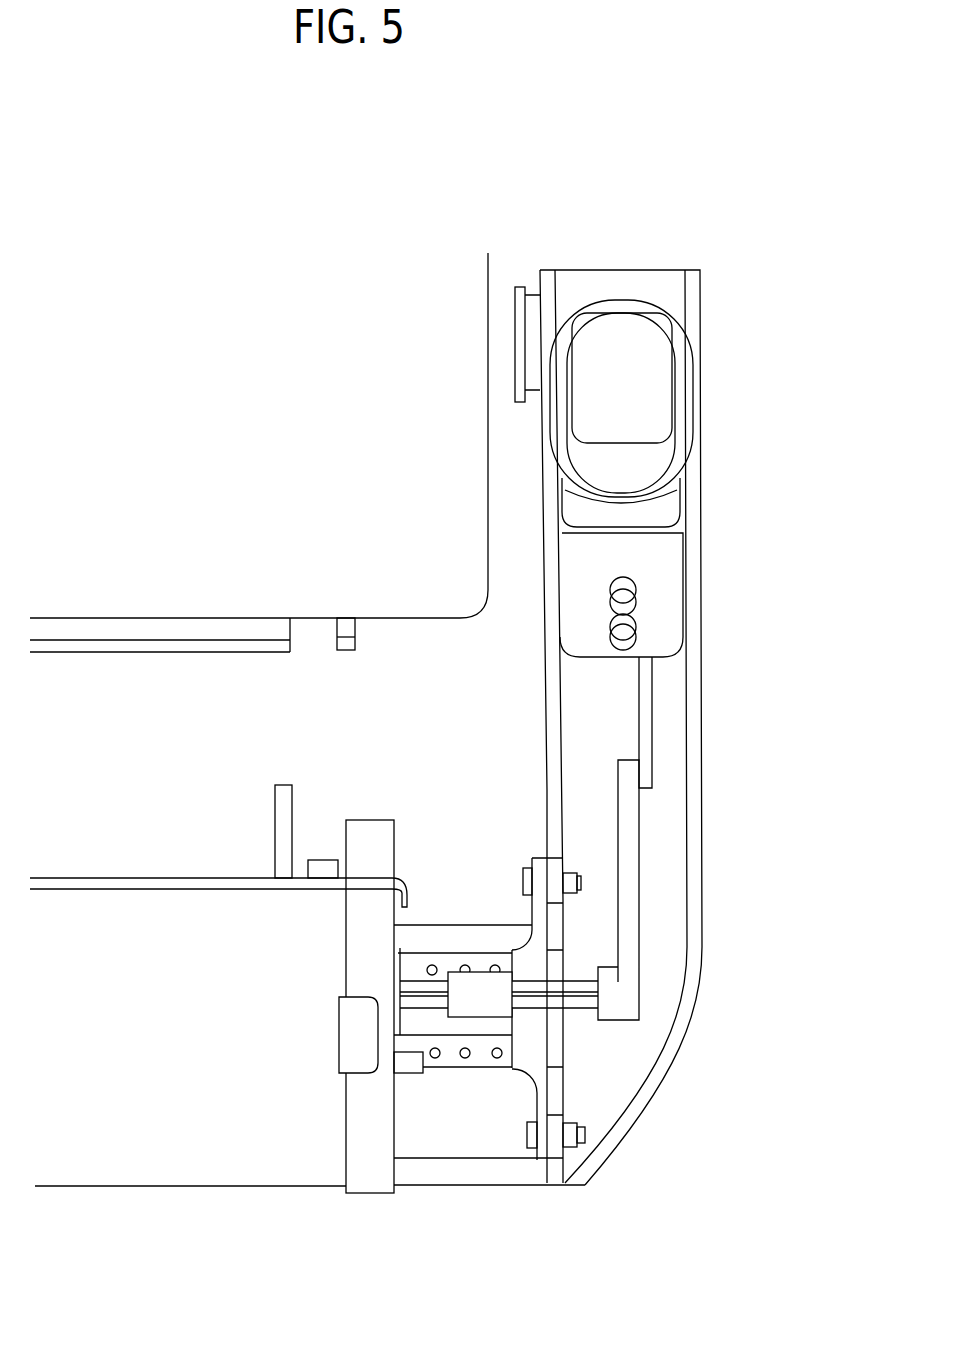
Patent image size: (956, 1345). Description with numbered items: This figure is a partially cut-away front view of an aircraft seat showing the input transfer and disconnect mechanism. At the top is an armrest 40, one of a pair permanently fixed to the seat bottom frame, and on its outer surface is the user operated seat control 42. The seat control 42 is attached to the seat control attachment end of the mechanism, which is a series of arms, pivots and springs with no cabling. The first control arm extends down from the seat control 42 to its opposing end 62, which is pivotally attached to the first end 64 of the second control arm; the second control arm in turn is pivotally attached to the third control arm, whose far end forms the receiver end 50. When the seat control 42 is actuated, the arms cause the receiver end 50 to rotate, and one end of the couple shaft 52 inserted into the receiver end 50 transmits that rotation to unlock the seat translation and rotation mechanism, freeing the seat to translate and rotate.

The arm rest 40 is at (647, 270).
The seat control 42 is at (638, 377).
The receiver end 50 is at (578, 1002).
The couple shaft 52 is at (483, 1002).
The opposing end of first control arm 62 is at (645, 700).
The first end of second control arm 64 is at (625, 883).